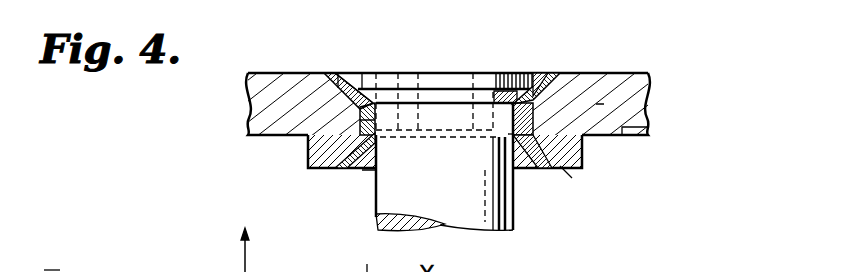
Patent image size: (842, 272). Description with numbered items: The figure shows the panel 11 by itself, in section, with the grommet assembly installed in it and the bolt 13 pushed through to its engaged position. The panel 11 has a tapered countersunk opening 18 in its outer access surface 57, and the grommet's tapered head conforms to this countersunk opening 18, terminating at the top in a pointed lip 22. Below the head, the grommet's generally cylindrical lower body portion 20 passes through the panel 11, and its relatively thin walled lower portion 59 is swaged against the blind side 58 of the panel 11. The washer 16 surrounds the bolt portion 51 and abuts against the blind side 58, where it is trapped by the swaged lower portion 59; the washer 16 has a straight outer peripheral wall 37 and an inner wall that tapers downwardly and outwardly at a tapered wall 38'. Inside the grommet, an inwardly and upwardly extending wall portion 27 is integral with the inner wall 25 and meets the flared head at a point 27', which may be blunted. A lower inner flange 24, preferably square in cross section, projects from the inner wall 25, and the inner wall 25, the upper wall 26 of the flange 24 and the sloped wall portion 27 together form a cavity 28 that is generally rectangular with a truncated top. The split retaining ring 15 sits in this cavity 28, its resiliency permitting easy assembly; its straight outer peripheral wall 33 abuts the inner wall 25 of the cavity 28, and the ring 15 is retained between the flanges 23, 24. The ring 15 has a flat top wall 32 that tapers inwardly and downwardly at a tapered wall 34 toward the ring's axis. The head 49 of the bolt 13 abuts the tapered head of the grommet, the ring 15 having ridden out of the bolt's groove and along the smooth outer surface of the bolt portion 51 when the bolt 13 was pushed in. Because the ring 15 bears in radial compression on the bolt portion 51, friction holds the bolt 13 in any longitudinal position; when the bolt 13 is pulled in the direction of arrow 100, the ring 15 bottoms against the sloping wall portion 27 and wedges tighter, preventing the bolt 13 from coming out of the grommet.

The panel 11 is at (627, 77).
The bolt 13 is at (490, 232).
The retaining ring 15 is at (508, 134).
The washer 16 is at (572, 178).
The countersunk opening 18 is at (560, 74).
The lower body portion 20 is at (358, 128).
The pointed lip 22 is at (329, 73).
The flange 23 is at (375, 95).
The lower inner flange 24 is at (350, 147).
The inner wall 25 is at (366, 172).
The upper wall 26 is at (382, 134).
The wall portion 27 is at (387, 66).
The point 27' is at (255, 261).
The cavity 28 is at (360, 112).
The top wall 32 is at (545, 78).
The outer peripheral wall 33 is at (648, 130).
The tapered wall 34 is at (492, 92).
The outer peripheral wall 37 is at (585, 162).
The tapered wall 38' is at (535, 158).
The head 49 is at (527, 88).
The bolt portion 51 is at (40, 266).
The outer access surface 57 is at (263, 73).
The blind side 58 is at (590, 137).
The lower portion 59 is at (344, 169).
The arrow 100 is at (243, 263).